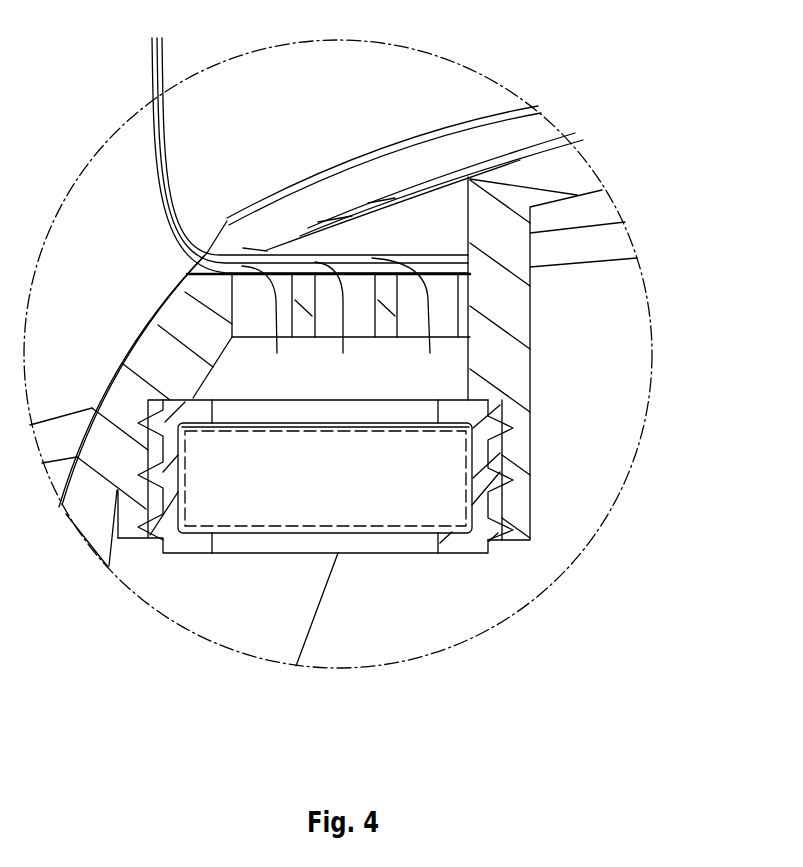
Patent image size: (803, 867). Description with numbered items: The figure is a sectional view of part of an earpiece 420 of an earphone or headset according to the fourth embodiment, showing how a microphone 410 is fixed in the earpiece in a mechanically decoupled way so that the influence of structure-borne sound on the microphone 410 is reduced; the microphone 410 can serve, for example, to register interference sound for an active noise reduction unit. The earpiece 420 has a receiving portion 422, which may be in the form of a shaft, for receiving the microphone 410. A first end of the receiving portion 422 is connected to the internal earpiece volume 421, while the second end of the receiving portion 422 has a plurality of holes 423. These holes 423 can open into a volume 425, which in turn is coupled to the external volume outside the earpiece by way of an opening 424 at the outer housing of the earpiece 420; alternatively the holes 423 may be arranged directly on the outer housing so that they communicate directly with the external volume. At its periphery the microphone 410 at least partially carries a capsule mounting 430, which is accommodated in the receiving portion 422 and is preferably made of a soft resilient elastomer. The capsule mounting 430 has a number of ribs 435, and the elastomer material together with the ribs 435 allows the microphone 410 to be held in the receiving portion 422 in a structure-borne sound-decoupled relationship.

The microphone 410 is at (430, 512).
The earpiece 420 is at (170, 318).
The internal earpiece volume 421 is at (380, 620).
The receiving portion 422 is at (150, 513).
The holes 423 is at (283, 288).
The opening 424 is at (301, 143).
The volume 425 is at (385, 252).
The capsule mounting 430 is at (488, 542).
The ribs 435 is at (504, 408).